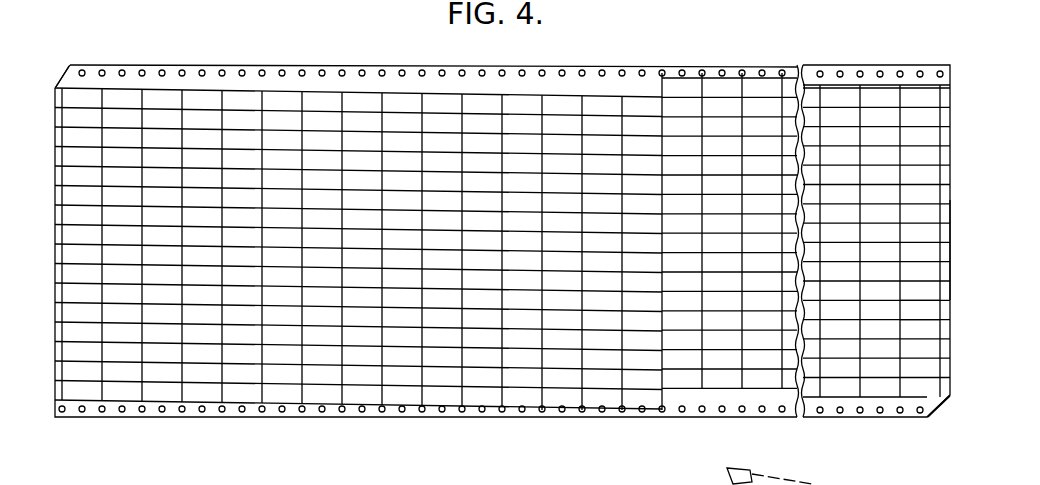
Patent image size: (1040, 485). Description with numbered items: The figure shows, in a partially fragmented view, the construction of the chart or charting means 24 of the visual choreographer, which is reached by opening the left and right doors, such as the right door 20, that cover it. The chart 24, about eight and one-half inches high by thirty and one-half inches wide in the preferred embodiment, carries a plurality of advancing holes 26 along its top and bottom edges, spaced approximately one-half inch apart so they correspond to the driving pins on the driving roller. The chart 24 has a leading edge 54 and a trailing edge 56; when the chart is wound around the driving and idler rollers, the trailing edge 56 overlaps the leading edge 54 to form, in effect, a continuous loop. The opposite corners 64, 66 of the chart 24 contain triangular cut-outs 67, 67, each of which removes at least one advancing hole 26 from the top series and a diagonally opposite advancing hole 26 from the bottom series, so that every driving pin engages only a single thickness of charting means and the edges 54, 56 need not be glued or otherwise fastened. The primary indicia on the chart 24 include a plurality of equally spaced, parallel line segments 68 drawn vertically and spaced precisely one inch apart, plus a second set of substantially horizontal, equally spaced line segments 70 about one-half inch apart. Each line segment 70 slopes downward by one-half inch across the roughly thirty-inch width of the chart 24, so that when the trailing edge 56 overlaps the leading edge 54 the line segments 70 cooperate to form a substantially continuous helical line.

The right door 20 is at (887, 484).
The chart 24 is at (926, 157).
The advancing holes 26 is at (302, 70).
The leading edge 54 is at (56, 395).
The trailing edge 56 is at (952, 254).
The corner 64 is at (57, 84).
The corner 66 is at (946, 408).
The triangular cut-outs 67 is at (66, 78).
The line segments 68 is at (222, 99).
The line segments 70 is at (930, 316).